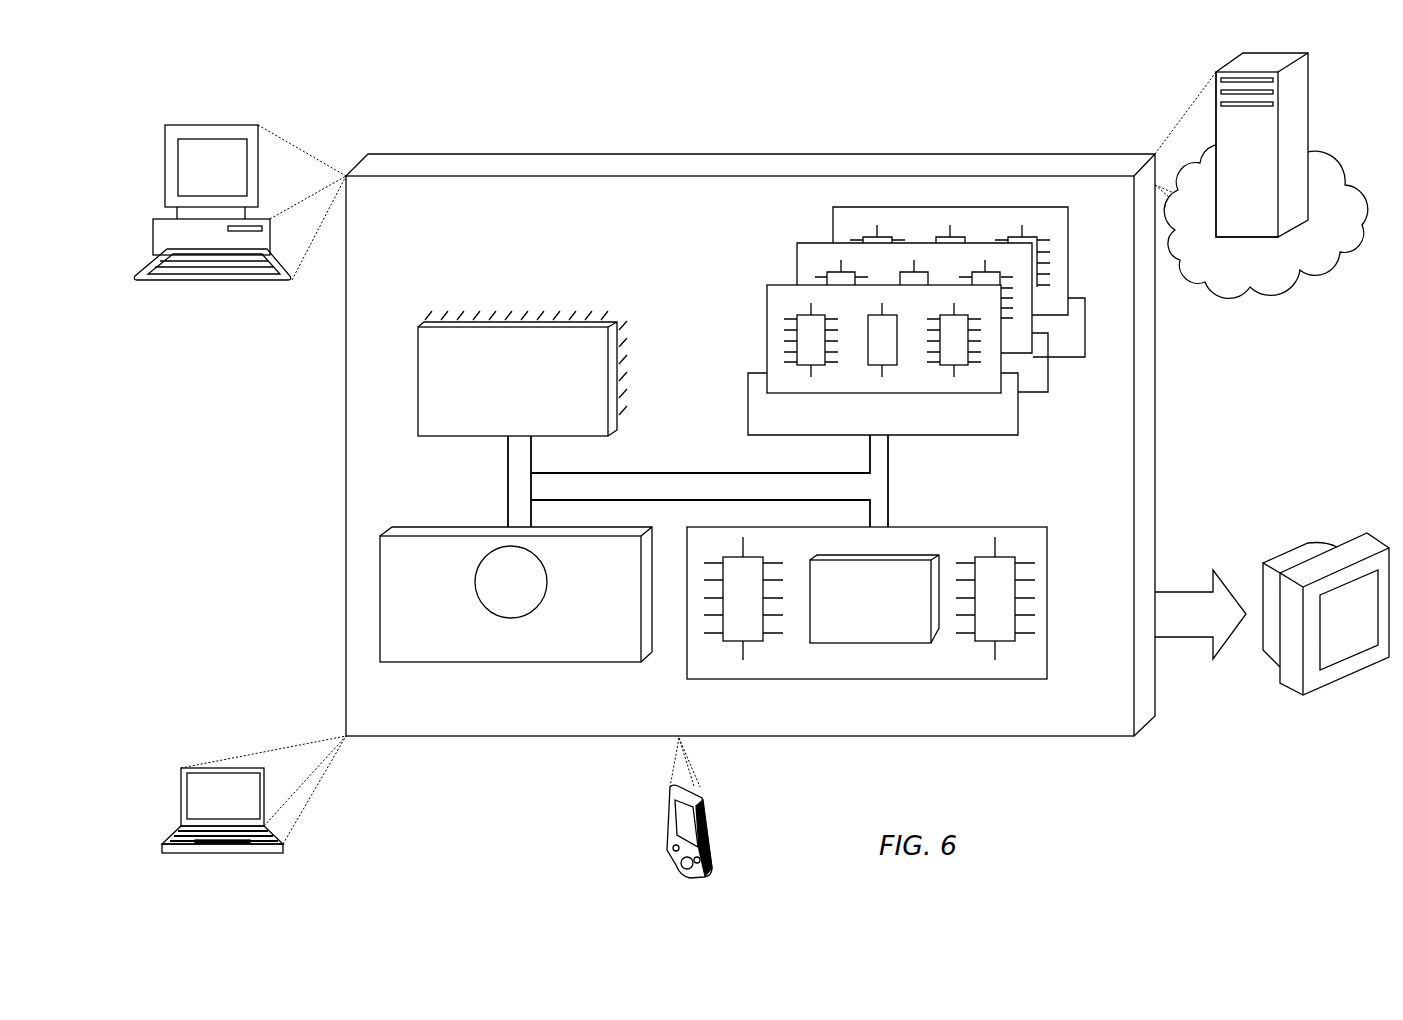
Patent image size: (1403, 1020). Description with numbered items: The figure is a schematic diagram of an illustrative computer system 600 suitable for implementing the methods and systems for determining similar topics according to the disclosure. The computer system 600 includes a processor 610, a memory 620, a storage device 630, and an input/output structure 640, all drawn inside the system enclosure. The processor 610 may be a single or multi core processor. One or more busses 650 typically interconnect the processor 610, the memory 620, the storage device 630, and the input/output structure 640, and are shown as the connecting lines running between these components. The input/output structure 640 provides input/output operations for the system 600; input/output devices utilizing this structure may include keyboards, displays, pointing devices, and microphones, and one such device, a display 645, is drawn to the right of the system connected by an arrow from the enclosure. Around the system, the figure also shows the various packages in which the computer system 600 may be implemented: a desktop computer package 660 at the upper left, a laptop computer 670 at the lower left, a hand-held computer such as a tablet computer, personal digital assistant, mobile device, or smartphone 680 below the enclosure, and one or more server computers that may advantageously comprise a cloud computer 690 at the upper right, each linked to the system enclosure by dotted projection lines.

The computer system 600 is at (673, 94).
The processor 610 is at (521, 416).
The memory 620 is at (797, 268).
The storage device 630 is at (562, 598).
The input/output structure 640 is at (1023, 526).
The display 645 is at (1298, 698).
The bus 650 is at (888, 488).
The desktop computer package 660 is at (210, 125).
The laptop computer 670 is at (197, 857).
The smartphone 680 is at (666, 818).
The cloud computer 690 is at (1283, 285).